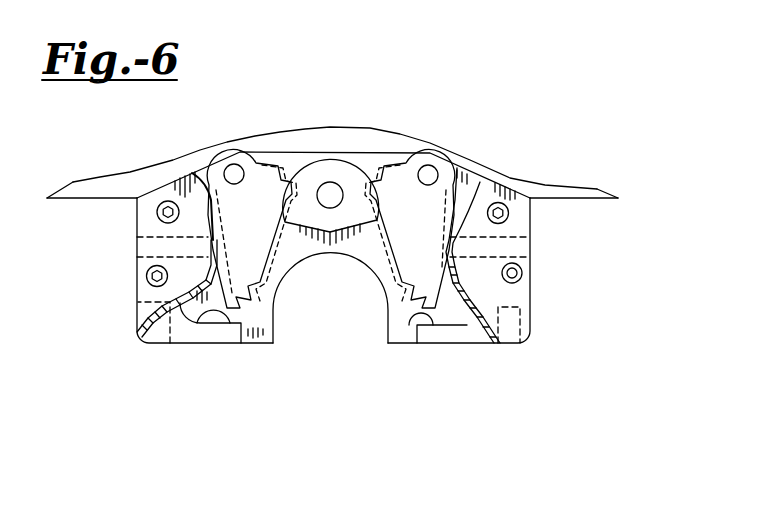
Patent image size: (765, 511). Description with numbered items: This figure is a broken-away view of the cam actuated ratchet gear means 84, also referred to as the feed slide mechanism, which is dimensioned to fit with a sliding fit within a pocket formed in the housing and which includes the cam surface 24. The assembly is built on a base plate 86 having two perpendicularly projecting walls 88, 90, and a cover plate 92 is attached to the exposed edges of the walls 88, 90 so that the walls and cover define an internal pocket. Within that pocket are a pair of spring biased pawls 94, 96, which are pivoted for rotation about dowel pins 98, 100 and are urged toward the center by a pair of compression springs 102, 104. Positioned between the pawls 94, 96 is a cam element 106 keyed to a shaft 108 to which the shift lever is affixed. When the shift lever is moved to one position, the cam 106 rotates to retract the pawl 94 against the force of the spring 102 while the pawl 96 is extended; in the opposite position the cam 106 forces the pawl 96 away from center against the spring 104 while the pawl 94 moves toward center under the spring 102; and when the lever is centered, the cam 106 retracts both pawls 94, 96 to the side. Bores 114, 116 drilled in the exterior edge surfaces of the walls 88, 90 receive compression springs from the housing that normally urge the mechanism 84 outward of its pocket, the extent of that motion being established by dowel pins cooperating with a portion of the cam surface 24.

The cam surface 24 is at (397, 130).
The cam actuated ratchet gear means 84 is at (560, 175).
The base plate 86 is at (261, 332).
The wall 88 is at (230, 344).
The wall 90 is at (409, 335).
The cover plate 92 is at (520, 290).
The pawl 94 is at (217, 189).
The pawl 96 is at (445, 213).
The dowel pin 98 is at (229, 163).
The dowel pin 100 is at (431, 165).
The compression spring 102 is at (137, 267).
The compression spring 104 is at (530, 267).
The cam element 106 is at (346, 146).
The shaft 108 is at (320, 182).
The bore 114 is at (137, 313).
The bore 116 is at (533, 327).